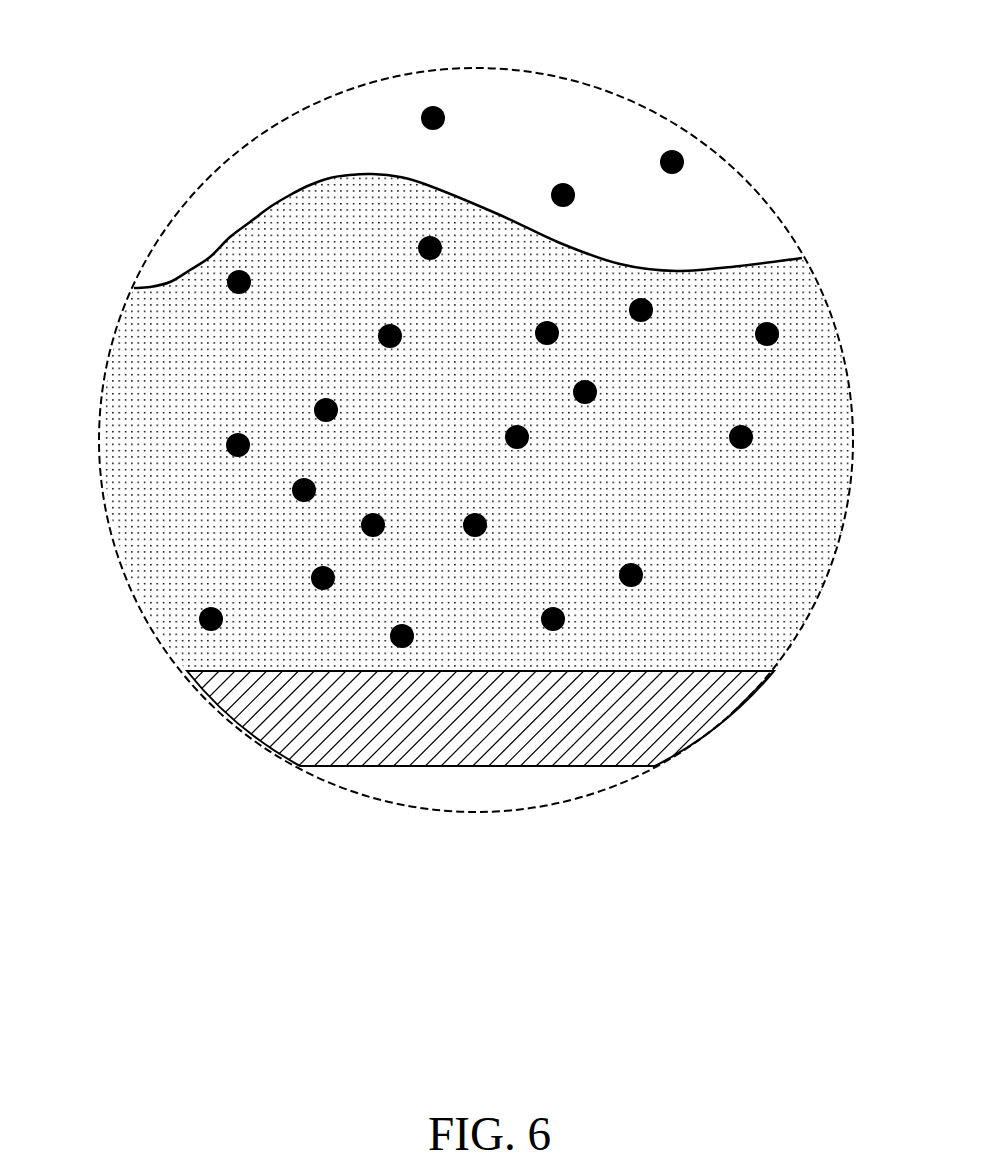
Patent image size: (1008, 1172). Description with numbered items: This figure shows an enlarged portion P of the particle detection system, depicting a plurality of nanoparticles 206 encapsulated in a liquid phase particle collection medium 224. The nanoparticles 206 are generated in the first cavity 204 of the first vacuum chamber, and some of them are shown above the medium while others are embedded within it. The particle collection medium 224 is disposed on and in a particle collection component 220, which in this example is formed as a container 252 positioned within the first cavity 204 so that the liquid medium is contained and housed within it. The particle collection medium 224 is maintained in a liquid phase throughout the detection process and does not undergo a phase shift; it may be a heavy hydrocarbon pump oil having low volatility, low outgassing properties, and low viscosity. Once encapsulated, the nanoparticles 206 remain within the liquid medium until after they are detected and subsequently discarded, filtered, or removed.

The enlarged portion P is at (545, 75).
The first cavity 204 is at (548, 140).
The nanoparticles 206 is at (779, 334).
The particle collection medium 224 is at (127, 530).
The particle collection component 220 is at (445, 718).
The container 252 is at (241, 706).